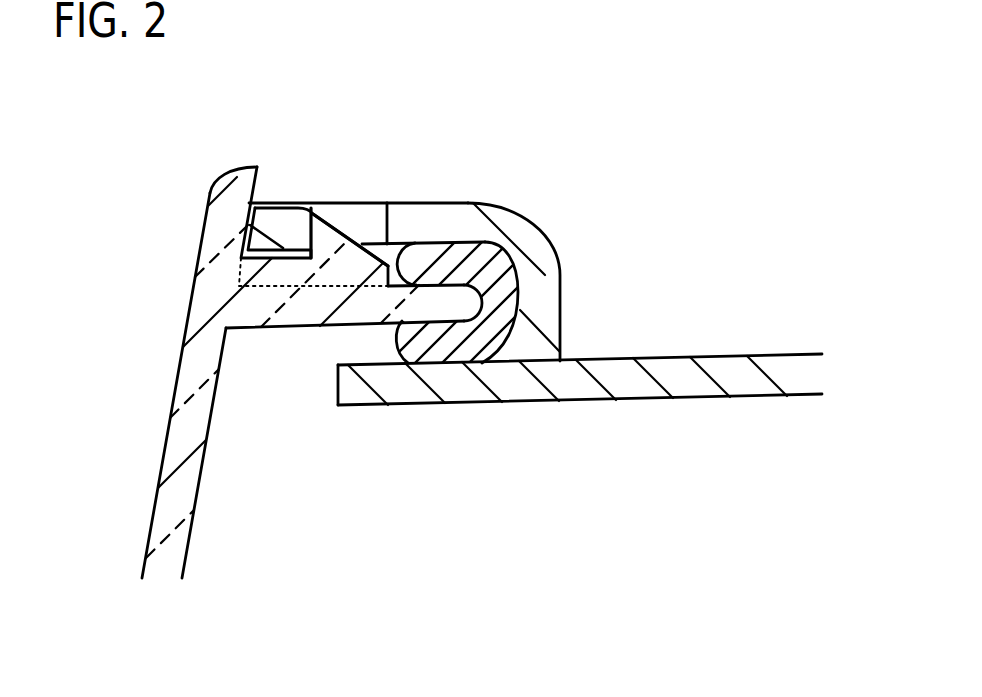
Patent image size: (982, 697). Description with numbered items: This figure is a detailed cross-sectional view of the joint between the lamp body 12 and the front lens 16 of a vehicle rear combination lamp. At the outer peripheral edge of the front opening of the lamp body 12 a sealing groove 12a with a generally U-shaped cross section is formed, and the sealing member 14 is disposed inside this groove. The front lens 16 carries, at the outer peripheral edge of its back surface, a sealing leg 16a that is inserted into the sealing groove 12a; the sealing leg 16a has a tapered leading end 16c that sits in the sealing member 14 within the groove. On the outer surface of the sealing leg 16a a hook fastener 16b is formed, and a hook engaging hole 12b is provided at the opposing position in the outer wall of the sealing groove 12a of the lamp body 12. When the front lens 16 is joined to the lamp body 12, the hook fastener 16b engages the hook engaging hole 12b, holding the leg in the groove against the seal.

The lamp body 12 is at (677, 356).
The sealing groove 12a is at (525, 243).
The hook engaging hole 12b is at (358, 220).
The sealing member 14 is at (498, 283).
The front lens 16 is at (176, 382).
The sealing leg 16a is at (296, 313).
The hook fastener 16b is at (337, 230).
The tapered leading end 16c is at (450, 322).